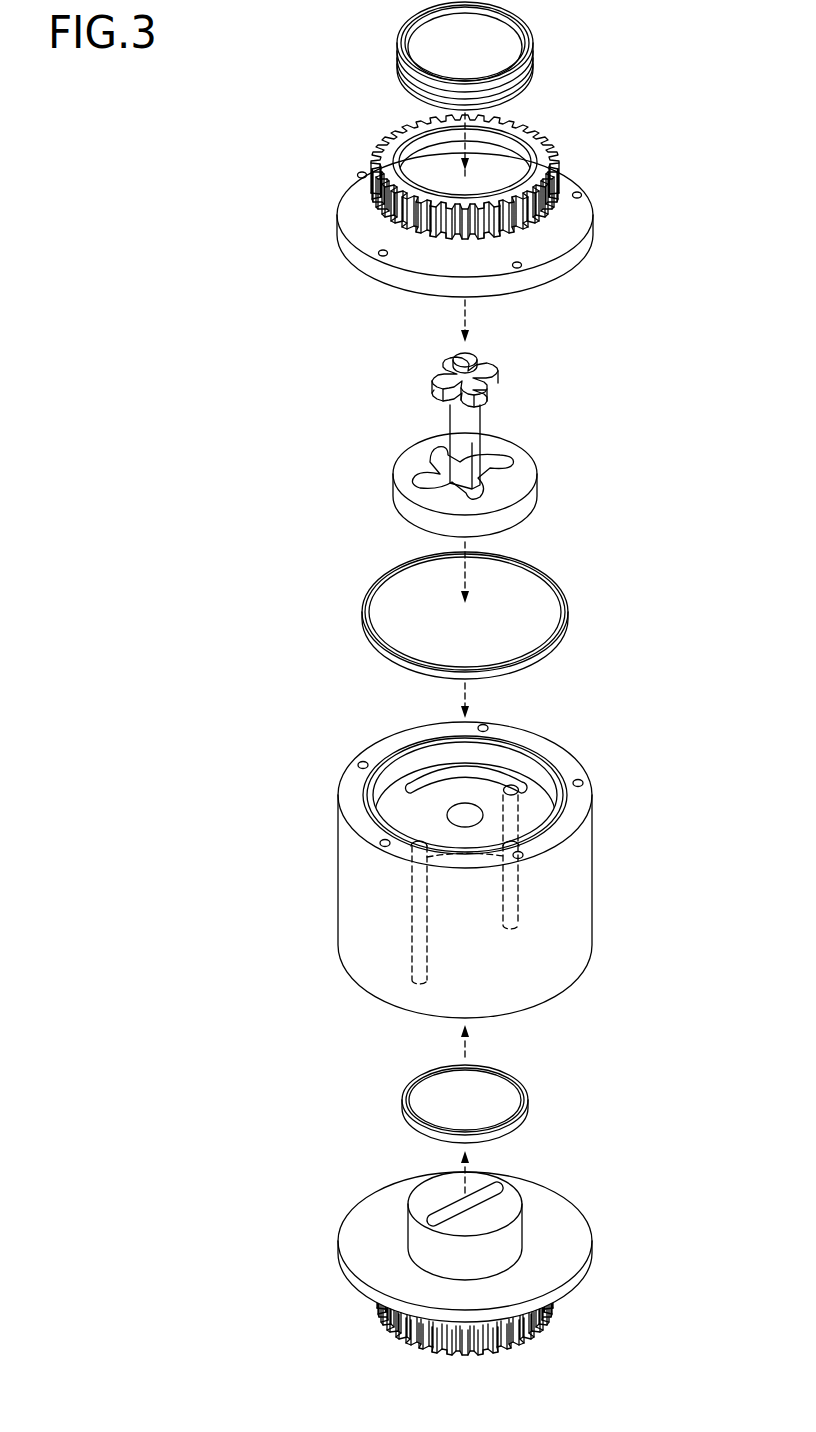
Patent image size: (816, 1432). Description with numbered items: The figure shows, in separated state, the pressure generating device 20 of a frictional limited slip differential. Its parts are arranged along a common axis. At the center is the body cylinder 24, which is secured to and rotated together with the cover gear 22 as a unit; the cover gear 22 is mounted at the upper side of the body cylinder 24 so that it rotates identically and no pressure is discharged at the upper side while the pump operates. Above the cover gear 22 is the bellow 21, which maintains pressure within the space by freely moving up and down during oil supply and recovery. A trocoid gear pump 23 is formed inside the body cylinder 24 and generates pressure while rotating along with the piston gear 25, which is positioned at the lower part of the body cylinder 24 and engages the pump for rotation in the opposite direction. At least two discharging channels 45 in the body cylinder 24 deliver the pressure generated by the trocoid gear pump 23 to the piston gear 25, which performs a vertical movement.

The pressure generating device 20 is at (296, 508).
The bellow 21 is at (542, 60).
The cover gear 22 is at (600, 213).
The trocoid gear pump 23 is at (545, 444).
The body cylinder 24 is at (609, 870).
The discharging channels 45 is at (515, 788).
The piston gear 25 is at (600, 1270).